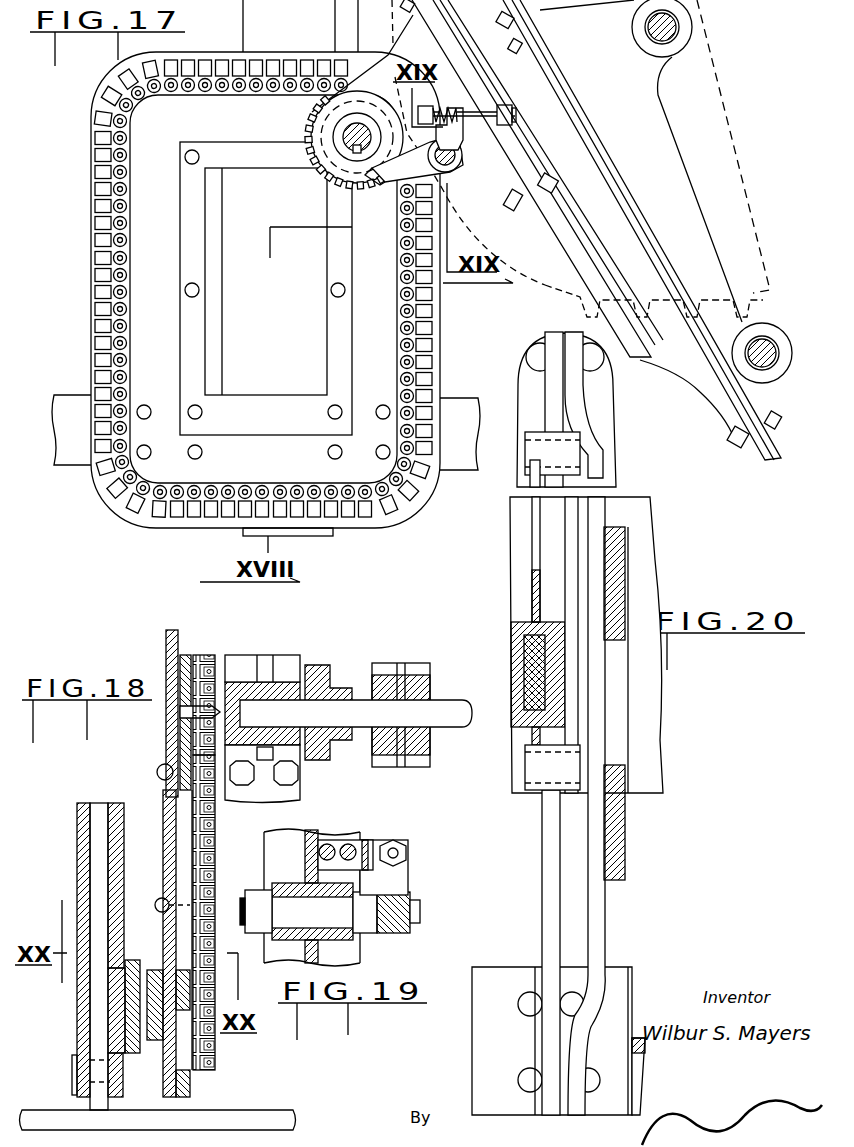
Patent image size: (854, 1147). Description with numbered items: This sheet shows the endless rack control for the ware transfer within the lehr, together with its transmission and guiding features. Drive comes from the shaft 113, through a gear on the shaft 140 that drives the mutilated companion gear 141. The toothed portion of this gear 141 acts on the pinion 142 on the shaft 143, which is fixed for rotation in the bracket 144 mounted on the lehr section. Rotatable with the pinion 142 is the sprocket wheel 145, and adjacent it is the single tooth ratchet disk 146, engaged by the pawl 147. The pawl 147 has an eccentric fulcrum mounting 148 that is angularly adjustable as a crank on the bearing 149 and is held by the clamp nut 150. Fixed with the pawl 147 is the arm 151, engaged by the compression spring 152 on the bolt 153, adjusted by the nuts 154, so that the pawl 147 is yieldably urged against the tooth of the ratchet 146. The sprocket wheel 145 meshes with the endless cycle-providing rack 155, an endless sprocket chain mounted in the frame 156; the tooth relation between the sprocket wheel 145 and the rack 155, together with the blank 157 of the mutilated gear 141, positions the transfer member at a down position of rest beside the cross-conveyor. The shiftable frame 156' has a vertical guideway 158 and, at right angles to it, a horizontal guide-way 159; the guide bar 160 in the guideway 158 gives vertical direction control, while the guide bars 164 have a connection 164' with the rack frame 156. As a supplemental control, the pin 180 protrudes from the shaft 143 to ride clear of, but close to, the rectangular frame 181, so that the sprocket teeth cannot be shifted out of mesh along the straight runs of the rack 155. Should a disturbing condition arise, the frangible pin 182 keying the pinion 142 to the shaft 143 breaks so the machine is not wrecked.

In FIG. 17, the shaft 113 is at (768, 366).
In FIG. 17, the shaft 140 is at (658, 50).
In FIG. 17, the mutilated companion gear 141 is at (766, 290).
In FIG. 17, the pinion 142 is at (343, 135).
In FIG. 18, the pinion 142 is at (440, 665).
In FIG. 17, the shaft 143 is at (333, 150).
In FIG. 18, the shaft 143 is at (357, 697).
In FIG. 17, the bracket 144 is at (600, 182).
In FIG. 19, the bracket 144 is at (352, 953).
In FIG. 18, the sprocket wheel 145 is at (200, 655).
In FIG. 17, the single tooth ratchet disk 146 is at (337, 147).
In FIG. 18, the single tooth ratchet disk 146 is at (302, 642).
In FIG. 17, the pawl 147 is at (390, 190).
In FIG. 19, the pawl 147 is at (393, 932).
In FIG. 17, the eccentric fulcrum mounting 148 is at (458, 162).
In FIG. 19, the eccentric fulcrum mounting 148 is at (387, 910).
In FIG. 19, the bearing 149 is at (297, 875).
In FIG. 19, the clamp nut 150 is at (263, 888).
In FIG. 17, the arm 151 is at (470, 131).
In FIG. 19, the arm 151 is at (402, 877).
In FIG. 17, the compression spring 152 is at (447, 104).
In FIG. 17, the bolt 153 is at (520, 98).
In FIG. 19, the bolt 153 is at (410, 845).
In FIG. 17, the nuts 154 is at (430, 104).
In FIG. 19, the nuts 154 is at (387, 847).
In FIG. 17, the endless cycle-providing rack 155 is at (403, 300).
In FIG. 18, the endless cycle-providing rack 155 is at (214, 1055).
In FIG. 17, the frame 156 is at (239, 294).
In FIG. 18, the frame 156 is at (205, 949).
In FIG. 20, the frame 156 is at (659, 703).
In FIG. 17, the shiftable frame 156' is at (245, 281).
In FIG. 20, the shiftable frame 156' is at (521, 758).
In FIG. 17, the blank 157 is at (533, 290).
In FIG. 18, the vertical guideway 158 is at (80, 858).
In FIG. 20, the vertical guideway 158 is at (514, 630).
In FIG. 18, the horizontal guide-way 159 is at (110, 1038).
In FIG. 17, the guide bar 160 is at (245, 38).
In FIG. 18, the guide bar 160 is at (97, 997).
In FIG. 20, the guide bar 160 is at (548, 617).
In FIG. 18, the guide bars 164 is at (73, 1010).
In FIG. 20, the guide bars 164 is at (532, 952).
In FIG. 17, the connection 164' is at (266, 450).
In FIG. 18, the connection 164' is at (159, 1010).
In FIG. 20, the connection 164' is at (616, 806).
In FIG. 18, the pin 180 is at (183, 709).
In FIG. 17, the rectangular frame 181 is at (352, 353).
In FIG. 18, the rectangular frame 181 is at (185, 750).
In FIG. 18, the frangible pin 182 is at (400, 753).